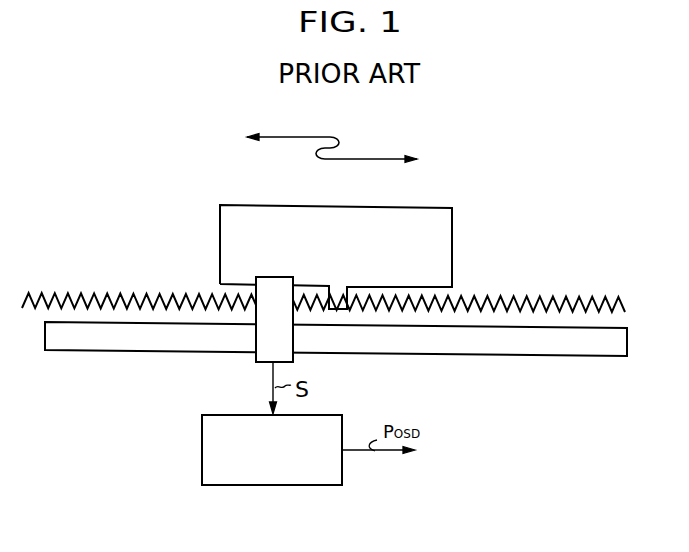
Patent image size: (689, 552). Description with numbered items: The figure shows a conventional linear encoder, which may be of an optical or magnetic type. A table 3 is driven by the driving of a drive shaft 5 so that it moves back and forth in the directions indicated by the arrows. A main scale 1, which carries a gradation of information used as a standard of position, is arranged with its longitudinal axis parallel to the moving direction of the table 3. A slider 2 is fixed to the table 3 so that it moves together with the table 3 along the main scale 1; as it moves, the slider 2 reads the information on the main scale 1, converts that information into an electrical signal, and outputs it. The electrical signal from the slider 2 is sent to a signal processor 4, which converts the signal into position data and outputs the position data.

The main scale 1 is at (515, 343).
The slider 2 is at (255, 355).
The table 3 is at (425, 207).
The signal processor 4 is at (328, 415).
The drive shaft 5 is at (538, 297).